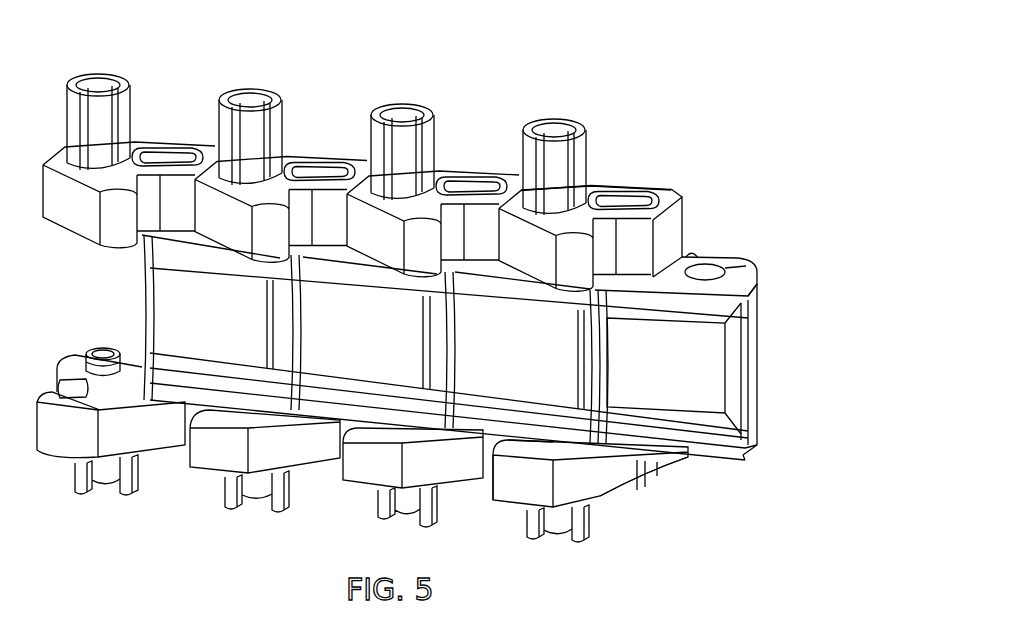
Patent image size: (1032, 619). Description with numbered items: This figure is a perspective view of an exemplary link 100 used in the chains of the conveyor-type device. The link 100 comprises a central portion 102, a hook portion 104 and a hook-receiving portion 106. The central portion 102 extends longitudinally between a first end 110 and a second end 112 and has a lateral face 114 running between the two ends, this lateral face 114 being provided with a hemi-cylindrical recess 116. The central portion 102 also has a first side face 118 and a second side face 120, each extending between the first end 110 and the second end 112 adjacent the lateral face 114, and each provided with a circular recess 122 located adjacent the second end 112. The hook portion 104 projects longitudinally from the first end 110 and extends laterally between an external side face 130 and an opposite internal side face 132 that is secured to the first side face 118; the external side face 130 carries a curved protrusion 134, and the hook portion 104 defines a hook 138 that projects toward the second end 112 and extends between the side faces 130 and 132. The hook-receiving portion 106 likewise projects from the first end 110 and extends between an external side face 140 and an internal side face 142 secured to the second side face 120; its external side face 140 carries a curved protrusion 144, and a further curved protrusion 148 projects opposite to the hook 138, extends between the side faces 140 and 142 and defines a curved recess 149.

The link 100 is at (673, 118).
The central portion 102 is at (745, 272).
The hook portion 104 is at (517, 205).
The hook-receiving portion 106 is at (580, 483).
The first end 110 is at (598, 352).
The second end 112 is at (763, 408).
The lateral face 114 is at (710, 447).
The hemi-cylindrical recess 116 is at (672, 372).
The first side face 118 is at (752, 287).
The second side face 120 is at (665, 463).
The circular recess 122 is at (708, 265).
The external side face 130 is at (610, 177).
The internal side face 132 is at (498, 270).
The curved protrusion 134 is at (537, 130).
The hook 138 is at (593, 237).
The external side face 140 is at (620, 503).
The internal side face 142 is at (533, 443).
The curved protrusion 144 is at (547, 532).
The curved protrusion 148 is at (513, 497).
The curved recess 149 is at (477, 467).